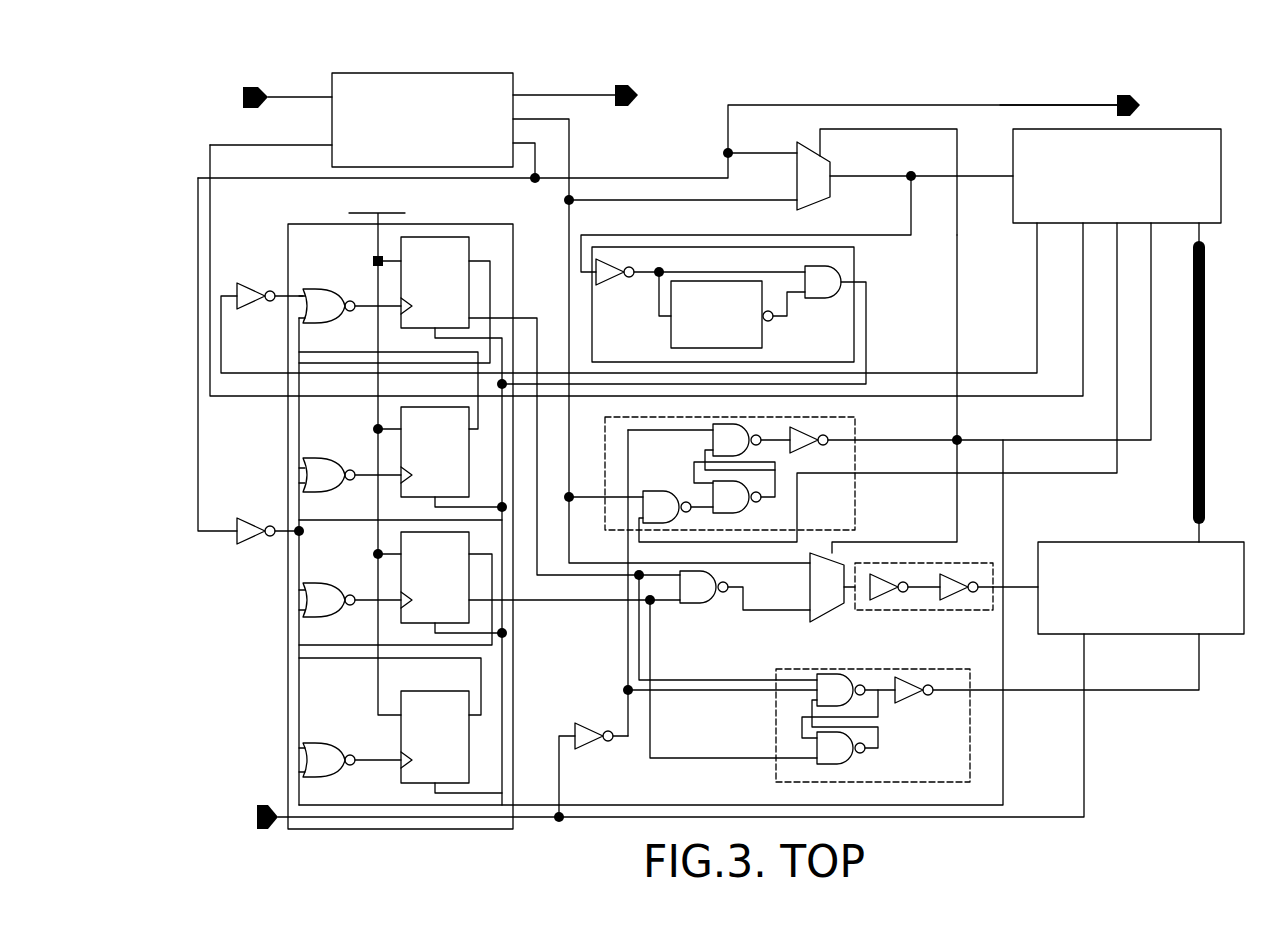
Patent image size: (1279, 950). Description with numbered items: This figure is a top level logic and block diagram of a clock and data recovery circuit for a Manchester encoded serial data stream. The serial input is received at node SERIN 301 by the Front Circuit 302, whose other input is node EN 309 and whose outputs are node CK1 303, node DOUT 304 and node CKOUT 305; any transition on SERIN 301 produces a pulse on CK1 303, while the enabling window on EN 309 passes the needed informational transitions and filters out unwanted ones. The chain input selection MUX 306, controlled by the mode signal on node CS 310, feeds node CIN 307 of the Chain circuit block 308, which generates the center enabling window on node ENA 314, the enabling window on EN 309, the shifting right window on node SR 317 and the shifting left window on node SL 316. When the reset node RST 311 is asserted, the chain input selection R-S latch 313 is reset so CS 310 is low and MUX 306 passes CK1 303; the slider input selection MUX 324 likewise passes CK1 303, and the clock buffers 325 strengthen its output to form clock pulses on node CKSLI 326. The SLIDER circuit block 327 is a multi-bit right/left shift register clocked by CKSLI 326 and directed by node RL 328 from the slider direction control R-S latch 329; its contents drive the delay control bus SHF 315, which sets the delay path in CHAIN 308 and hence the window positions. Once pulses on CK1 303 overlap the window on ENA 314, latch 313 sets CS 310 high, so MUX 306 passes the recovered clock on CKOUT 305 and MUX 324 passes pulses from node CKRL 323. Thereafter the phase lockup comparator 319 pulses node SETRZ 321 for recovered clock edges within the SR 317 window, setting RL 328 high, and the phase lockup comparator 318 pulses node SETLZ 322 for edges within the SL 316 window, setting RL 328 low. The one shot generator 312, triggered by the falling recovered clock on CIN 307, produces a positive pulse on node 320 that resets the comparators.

The node SERIN 301 is at (287, 99).
The Front Circuit 302 is at (513, 78).
The node CK1 303 is at (570, 166).
The node DOUT 304 is at (633, 88).
The node CKOUT 305 is at (1130, 93).
The chain input selection MUX 306 is at (807, 140).
The node CIN 307 is at (898, 163).
The Chain circuit block 308 is at (1025, 128).
The node EN 309 is at (1083, 315).
The node CS 310 is at (957, 357).
The reset node RST 311 is at (267, 808).
The one shot generator 312 is at (855, 270).
The chain input selection R-S latch 313 is at (855, 487).
The node ENA 314 is at (1015, 477).
The delay control bus SHF[0:35] 315 is at (1203, 472).
The node SL 316 is at (1029, 368).
The node SR 317 is at (1128, 442).
The phase lockup comparator 318 is at (287, 410).
The phase lockup comparator 319 is at (288, 608).
The phase comparison circuit 320 is at (515, 692).
The node SETRZ 321 is at (718, 760).
The node SETLZ 322 is at (660, 680).
The node CKRL 323 is at (770, 612).
The slider input selection MUX 324 is at (833, 608).
The clock buffers 325 is at (912, 610).
The node CKSLI 326 is at (1013, 588).
The SLIDER circuit block 327 is at (1223, 635).
The node RL 328 is at (1158, 692).
The slider direction control R-S latch 329 is at (970, 735).